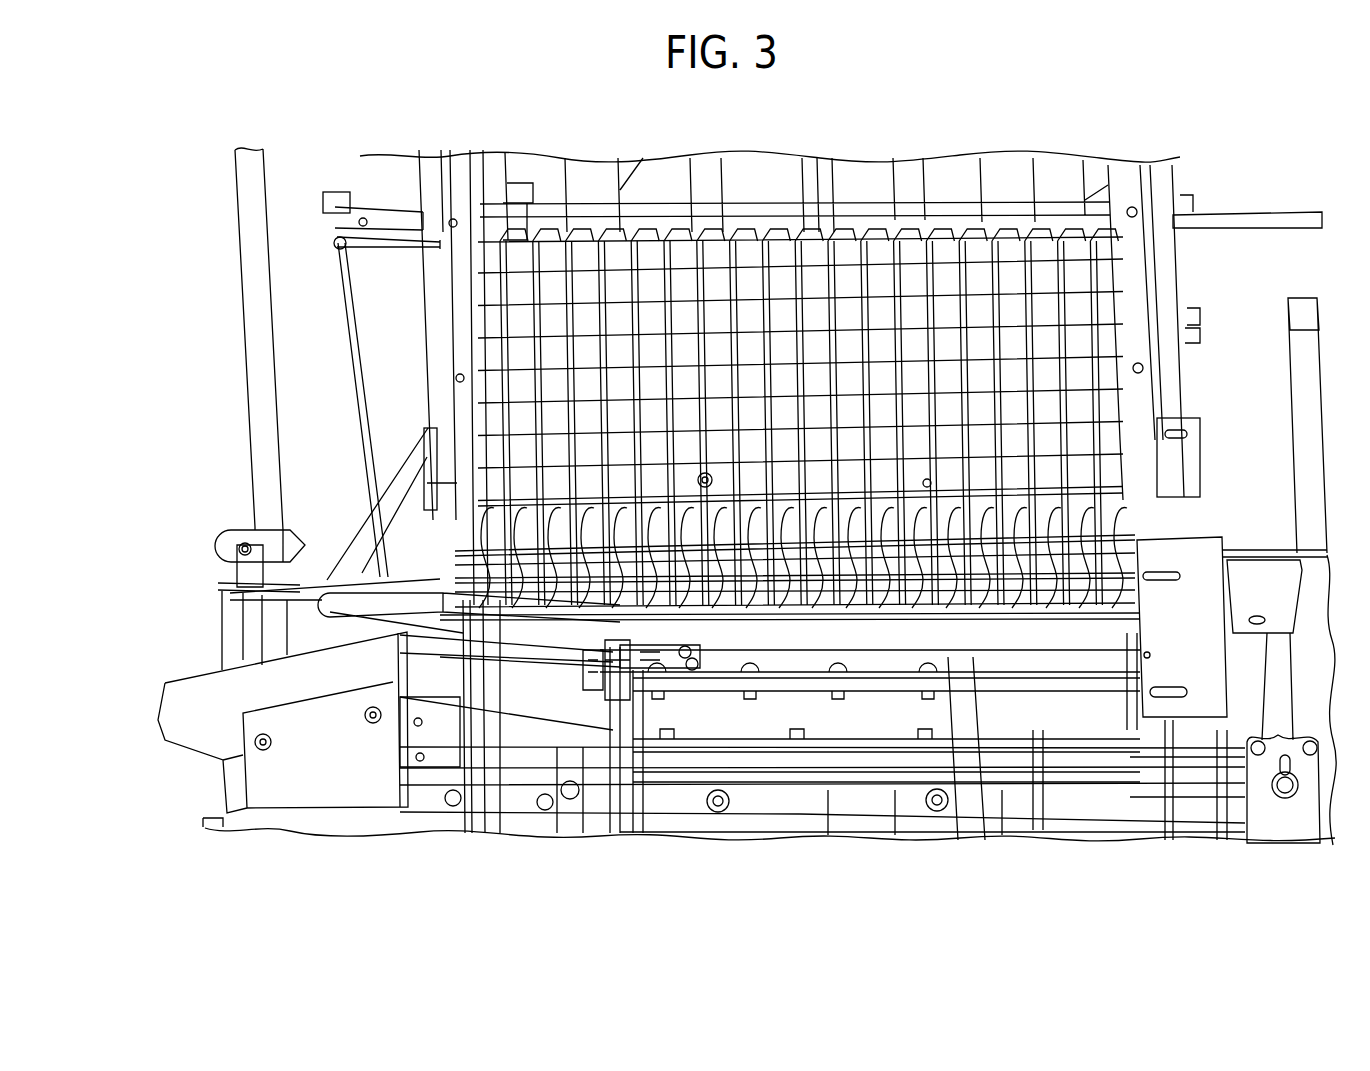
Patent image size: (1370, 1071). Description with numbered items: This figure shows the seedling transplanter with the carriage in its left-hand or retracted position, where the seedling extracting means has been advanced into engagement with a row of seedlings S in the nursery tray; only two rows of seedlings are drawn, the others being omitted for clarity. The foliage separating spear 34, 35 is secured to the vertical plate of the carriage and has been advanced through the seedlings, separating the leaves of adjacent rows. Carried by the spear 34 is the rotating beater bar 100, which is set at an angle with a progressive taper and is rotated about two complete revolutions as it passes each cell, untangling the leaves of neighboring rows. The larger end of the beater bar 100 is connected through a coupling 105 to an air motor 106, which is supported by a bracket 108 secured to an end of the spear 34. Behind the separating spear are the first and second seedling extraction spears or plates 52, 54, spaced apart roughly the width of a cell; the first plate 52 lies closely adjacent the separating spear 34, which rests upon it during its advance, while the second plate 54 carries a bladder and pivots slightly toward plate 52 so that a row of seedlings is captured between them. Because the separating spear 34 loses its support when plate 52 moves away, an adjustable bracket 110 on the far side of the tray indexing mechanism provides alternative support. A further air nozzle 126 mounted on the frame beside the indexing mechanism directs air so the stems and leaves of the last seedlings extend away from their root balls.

The foliage separating spear 34 is at (973, 644).
The foliage separating spear 35 is at (1097, 596).
The first seedling extraction spear 52 is at (803, 660).
The second seedling extraction spear 54 is at (887, 731).
The rotating beater bar 100 is at (550, 645).
The coupling 105 is at (595, 655).
The air motor 106 is at (668, 645).
The bracket 108 is at (622, 668).
The adjustable bracket 110 is at (298, 613).
The further air nozzle 126 is at (268, 535).
The seedlings S is at (1113, 510).